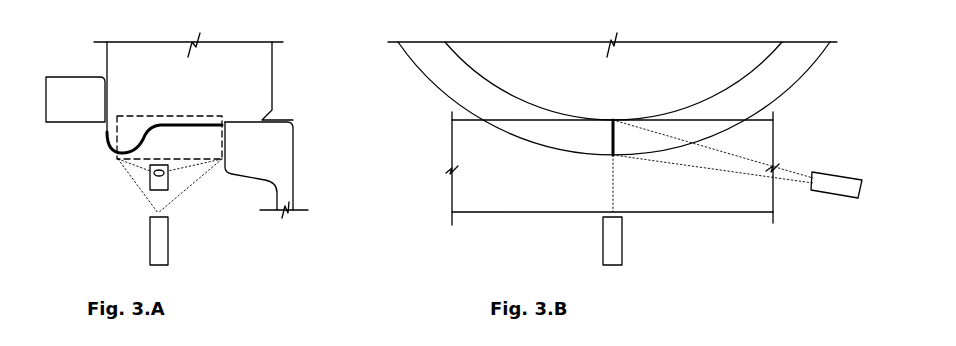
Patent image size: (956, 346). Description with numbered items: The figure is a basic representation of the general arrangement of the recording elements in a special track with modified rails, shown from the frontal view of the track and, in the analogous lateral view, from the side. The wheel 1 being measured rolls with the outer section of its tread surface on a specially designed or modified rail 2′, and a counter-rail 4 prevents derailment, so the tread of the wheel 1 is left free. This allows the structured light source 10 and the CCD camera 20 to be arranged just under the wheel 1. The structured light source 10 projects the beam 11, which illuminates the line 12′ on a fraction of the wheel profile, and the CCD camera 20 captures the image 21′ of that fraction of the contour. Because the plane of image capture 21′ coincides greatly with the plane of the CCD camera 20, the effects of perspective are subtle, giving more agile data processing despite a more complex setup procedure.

In FIG. 3.A, the wheel 1 is at (148, 58).
In FIG. 3.B, the wheel 1 is at (667, 58).
In FIG. 3.A, the modified rail 2′ is at (272, 158).
In FIG. 3.B, the modified rail 2′ is at (518, 180).
In FIG. 3.A, the counter-rail 4 is at (75, 103).
In FIG. 3.A, the structured light source 10 is at (158, 248).
In FIG. 3.B, the structured light source 10 is at (615, 240).
In FIG. 3.A, the beam 11 is at (158, 203).
In FIG. 3.B, the beam 11 is at (612, 200).
In FIG. 3.A, the line of light 12′ is at (168, 125).
In FIG. 3.B, the line of light 12′ is at (610, 138).
In FIG. 3.A, the CCD camera 20 is at (155, 186).
In FIG. 3.B, the CCD camera 20 is at (837, 183).
In FIG. 3.A, the image 21′ is at (113, 143).